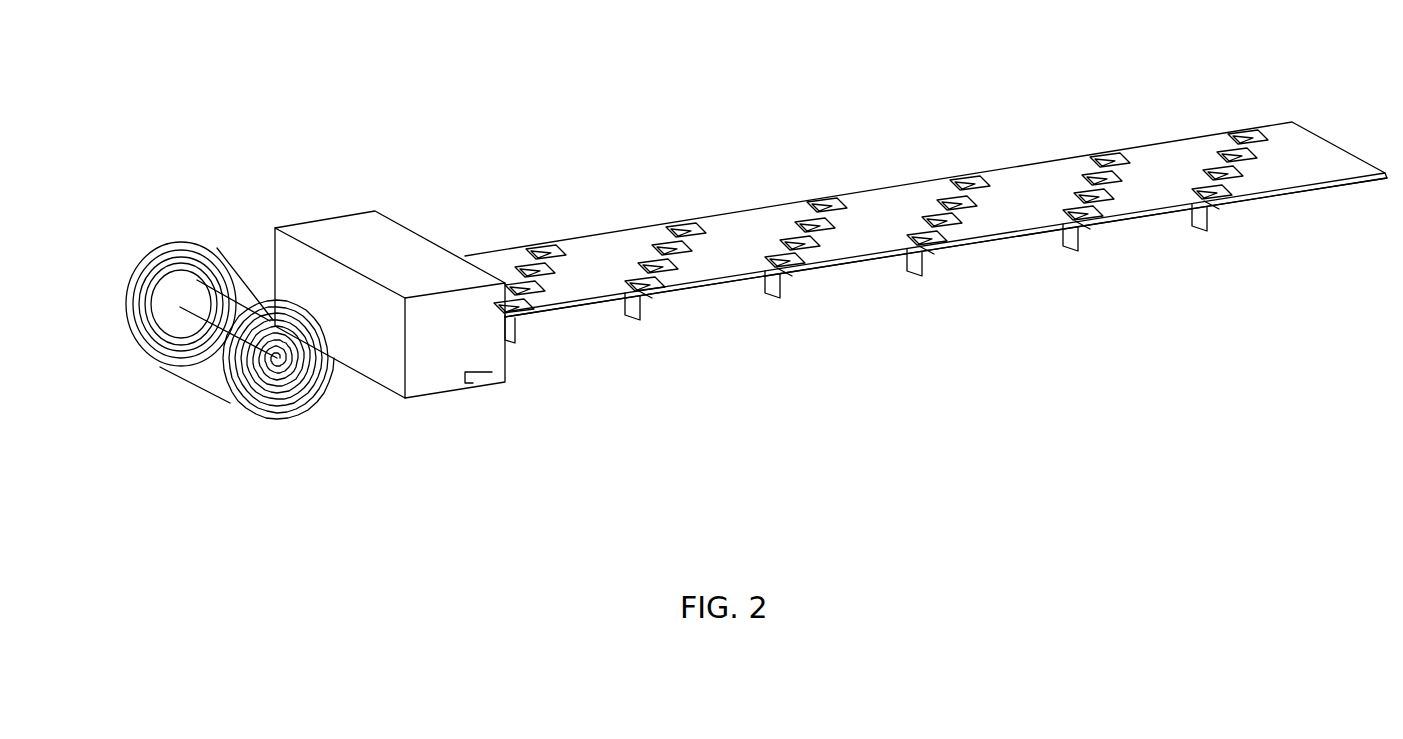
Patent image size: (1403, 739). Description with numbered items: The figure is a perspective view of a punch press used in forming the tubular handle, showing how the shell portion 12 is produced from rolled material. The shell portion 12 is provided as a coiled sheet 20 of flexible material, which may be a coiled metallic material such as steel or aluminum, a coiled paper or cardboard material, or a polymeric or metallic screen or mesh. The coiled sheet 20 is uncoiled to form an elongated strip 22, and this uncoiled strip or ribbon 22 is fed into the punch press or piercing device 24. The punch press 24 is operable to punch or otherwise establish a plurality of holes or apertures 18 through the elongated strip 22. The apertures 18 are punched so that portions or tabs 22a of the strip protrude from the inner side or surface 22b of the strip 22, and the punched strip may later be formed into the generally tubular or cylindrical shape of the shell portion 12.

The shell portion 12 is at (926, 199).
The holes or apertures 18 is at (685, 230).
The coiled sheet 20 is at (193, 232).
The elongated strip 22 is at (926, 196).
The tabs 22a is at (773, 300).
The inner side or surface 22b is at (868, 265).
The punch press 24 is at (470, 375).